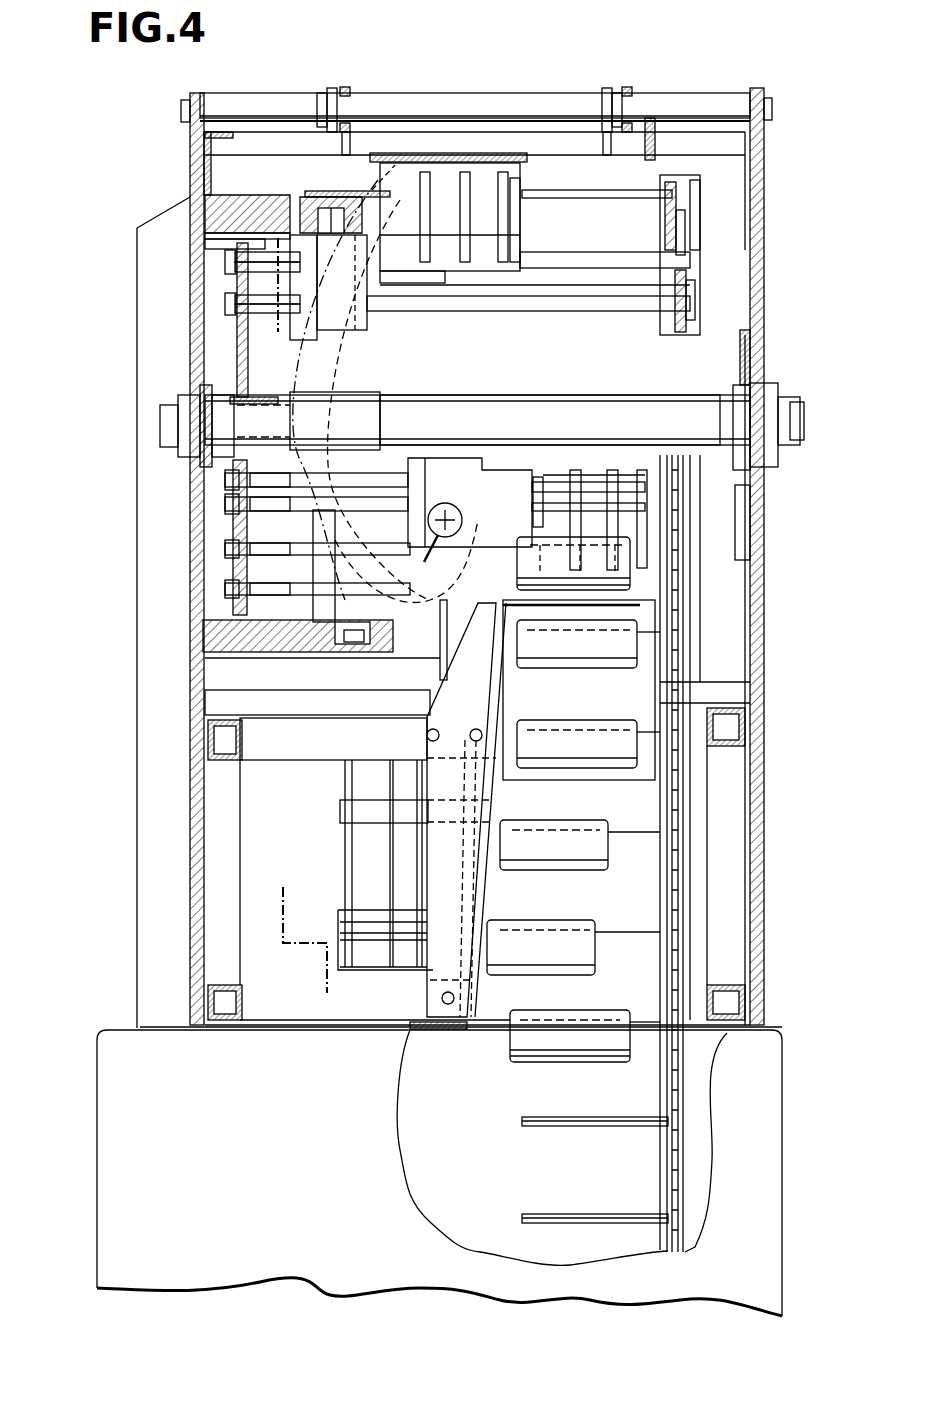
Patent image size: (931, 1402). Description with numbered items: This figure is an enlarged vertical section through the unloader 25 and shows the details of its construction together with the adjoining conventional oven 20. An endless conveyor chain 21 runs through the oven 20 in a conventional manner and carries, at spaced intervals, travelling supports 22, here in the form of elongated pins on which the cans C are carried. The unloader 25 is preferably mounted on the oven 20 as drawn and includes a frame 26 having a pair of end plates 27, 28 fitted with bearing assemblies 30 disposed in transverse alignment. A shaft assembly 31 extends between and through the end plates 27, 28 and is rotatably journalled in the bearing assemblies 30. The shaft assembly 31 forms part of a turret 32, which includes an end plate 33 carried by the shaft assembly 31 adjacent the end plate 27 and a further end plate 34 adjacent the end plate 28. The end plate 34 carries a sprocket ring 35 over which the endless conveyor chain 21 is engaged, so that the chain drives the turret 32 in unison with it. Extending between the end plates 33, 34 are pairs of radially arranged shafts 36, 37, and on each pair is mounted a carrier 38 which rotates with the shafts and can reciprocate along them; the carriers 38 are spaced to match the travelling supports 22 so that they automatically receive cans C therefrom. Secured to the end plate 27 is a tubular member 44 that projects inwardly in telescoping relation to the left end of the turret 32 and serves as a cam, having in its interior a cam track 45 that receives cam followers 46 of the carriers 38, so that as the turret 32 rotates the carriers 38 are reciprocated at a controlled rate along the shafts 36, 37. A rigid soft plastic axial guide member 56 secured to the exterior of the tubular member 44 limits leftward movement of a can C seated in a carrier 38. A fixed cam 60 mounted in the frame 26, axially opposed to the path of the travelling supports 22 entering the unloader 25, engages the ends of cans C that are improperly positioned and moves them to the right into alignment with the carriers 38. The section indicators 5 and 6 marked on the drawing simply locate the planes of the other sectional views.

The section line 5- 5 is at (277, 107).
The section line 6- 6 is at (520, 143).
The oven 20 is at (795, 1072).
The endless conveyor chain 21 is at (678, 1083).
The travelling supports 22 is at (602, 188).
The unloader 25 is at (776, 325).
The frame 26 is at (186, 182).
The end plate 27 is at (190, 823).
The end plate 28 is at (762, 792).
The bearing assemblies 30 is at (778, 384).
The shaft assembly 31 is at (546, 412).
The turret 32 is at (702, 243).
The end plate 33 is at (237, 347).
The end plate 34 is at (700, 332).
The sprocket ring 35 is at (665, 220).
The shaft 36 is at (600, 258).
The shaft 37 is at (612, 312).
The carrier 38 is at (428, 312).
The tubular member 44 is at (262, 222).
The cam track 45 is at (332, 226).
The cam followers 46 is at (332, 232).
The axial guide member 56 is at (380, 188).
The fixed cam 60 is at (488, 715).
The can C is at (572, 860).